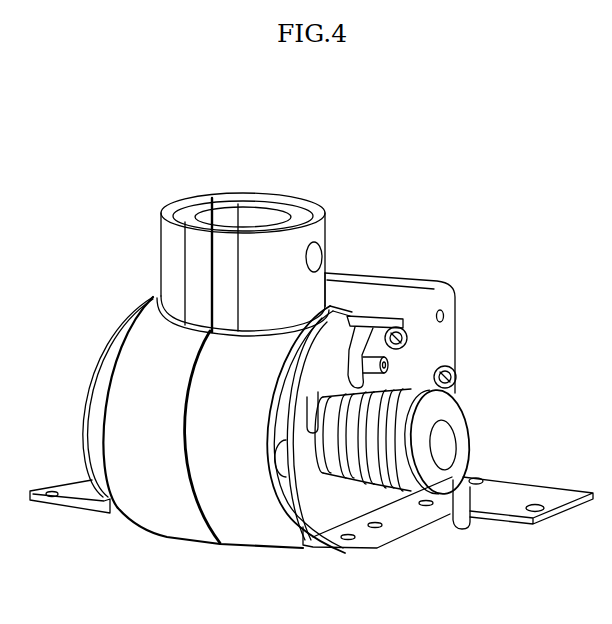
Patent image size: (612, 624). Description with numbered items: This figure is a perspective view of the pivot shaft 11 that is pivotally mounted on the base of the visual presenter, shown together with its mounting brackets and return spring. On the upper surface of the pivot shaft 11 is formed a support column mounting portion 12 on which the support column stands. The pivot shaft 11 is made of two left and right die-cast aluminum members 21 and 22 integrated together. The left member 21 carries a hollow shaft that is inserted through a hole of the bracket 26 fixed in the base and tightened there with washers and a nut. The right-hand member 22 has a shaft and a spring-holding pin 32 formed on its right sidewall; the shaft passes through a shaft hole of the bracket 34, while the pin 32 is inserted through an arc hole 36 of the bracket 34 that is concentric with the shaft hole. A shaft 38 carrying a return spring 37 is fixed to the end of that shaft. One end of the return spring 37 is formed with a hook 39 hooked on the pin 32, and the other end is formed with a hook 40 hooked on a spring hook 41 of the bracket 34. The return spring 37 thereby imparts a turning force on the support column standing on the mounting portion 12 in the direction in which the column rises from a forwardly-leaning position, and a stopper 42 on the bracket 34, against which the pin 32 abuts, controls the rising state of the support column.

The pivot shaft 11 is at (436, 261).
The support column mounting portion 12 is at (197, 268).
The left member 21 is at (190, 525).
The right-hand member 22 is at (246, 530).
The bracket 26 is at (81, 498).
The spring-holding pin 32 is at (406, 343).
The bracket 34 is at (444, 355).
The arc hole 36 is at (313, 435).
The return spring 37 is at (392, 467).
The shaft 38 is at (443, 428).
The hook 39 is at (362, 388).
The hook 40 is at (458, 524).
The spring hook 41 is at (497, 517).
The stopper 42 is at (373, 343).